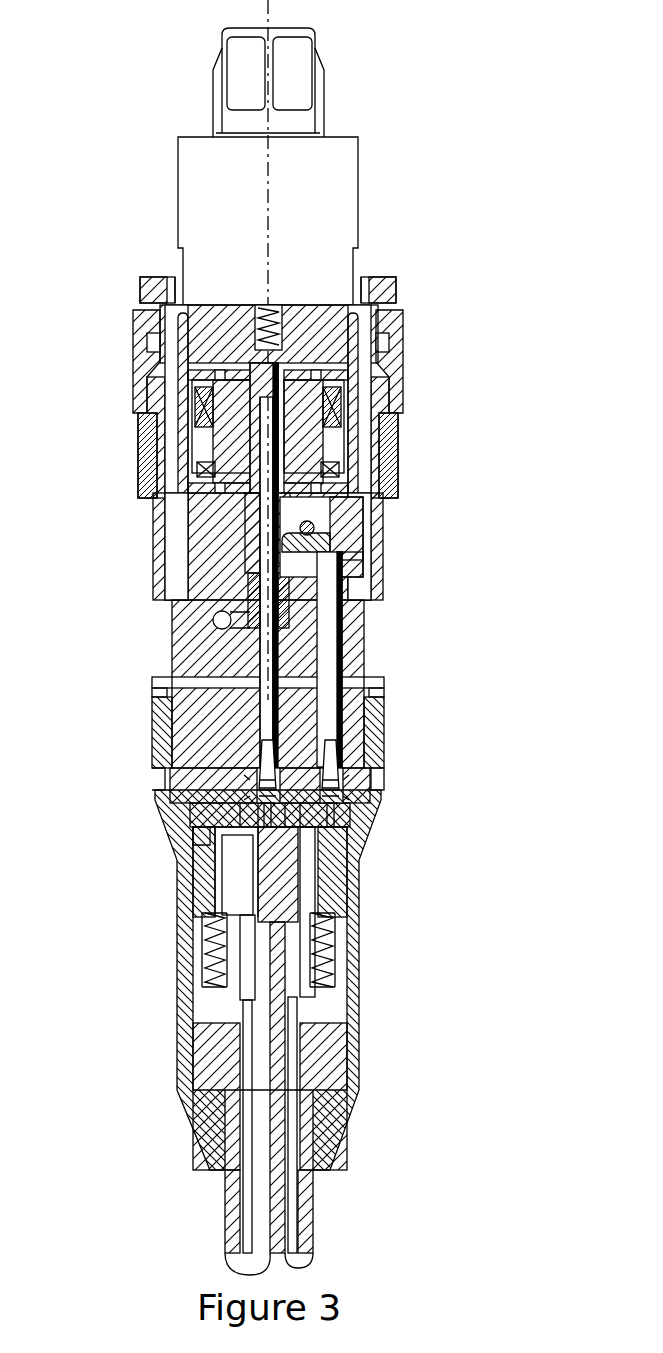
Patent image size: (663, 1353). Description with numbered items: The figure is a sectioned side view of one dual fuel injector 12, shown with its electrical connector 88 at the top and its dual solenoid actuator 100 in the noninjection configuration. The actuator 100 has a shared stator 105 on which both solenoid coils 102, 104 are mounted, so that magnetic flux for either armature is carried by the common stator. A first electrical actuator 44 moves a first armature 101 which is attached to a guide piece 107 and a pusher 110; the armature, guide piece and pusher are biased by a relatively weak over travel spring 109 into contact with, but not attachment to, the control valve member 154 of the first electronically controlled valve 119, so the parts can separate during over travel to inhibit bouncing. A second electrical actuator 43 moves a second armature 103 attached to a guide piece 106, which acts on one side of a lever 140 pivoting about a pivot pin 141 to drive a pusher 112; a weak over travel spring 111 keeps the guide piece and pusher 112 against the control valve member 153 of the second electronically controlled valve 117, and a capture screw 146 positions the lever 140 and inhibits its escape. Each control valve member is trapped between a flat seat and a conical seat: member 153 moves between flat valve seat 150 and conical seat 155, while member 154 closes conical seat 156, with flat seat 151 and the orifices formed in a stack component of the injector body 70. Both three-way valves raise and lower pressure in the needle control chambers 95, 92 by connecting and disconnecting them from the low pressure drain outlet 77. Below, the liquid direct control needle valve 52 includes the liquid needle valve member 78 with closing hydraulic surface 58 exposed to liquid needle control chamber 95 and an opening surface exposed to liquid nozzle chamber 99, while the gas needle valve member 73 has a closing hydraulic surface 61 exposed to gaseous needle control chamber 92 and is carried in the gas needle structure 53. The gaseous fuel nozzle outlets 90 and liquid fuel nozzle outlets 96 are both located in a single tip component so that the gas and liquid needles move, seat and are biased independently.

The electrical connector 88 is at (268, 3).
The fuel injector 12 is at (410, 383).
The guide piece 107 is at (330, 365).
The over travel spring 109 is at (268, 305).
The dual solenoid actuator 100 is at (157, 455).
The shared stator 105 is at (398, 440).
The electrical actuator 44 is at (178, 338).
The guide piece 106 is at (178, 565).
The first armature 101 is at (188, 376).
The solenoid coil 102 is at (195, 410).
The solenoid coil 104 is at (200, 468).
The second armature 103 is at (200, 490).
The electrical actuator 43 is at (370, 480).
The over travel spring 111 is at (290, 610).
The pusher 112 is at (292, 640).
The lever 140 is at (335, 545).
The pivot pin 141 is at (315, 528).
The capture screw 146 is at (345, 590).
The pusher 110 is at (215, 627).
The drain outlet 77 is at (165, 780).
The flat valve seat 150 is at (375, 790).
The flat seat 151 is at (275, 770).
The control valve member 153 is at (340, 770).
The conical seat 155 is at (350, 785).
The conical seat 156 is at (262, 775).
The electronically controlled valve 117 is at (378, 780).
The electronically controlled valve 119 is at (165, 770).
The control valve member 154 is at (195, 812).
The injector body 70 is at (362, 880).
The liquid needle control chamber 95 is at (358, 830).
The closing hydraulic surface 61 is at (190, 830).
The closing hydraulic surface 58 is at (255, 830).
The gaseous needle control chamber 92 is at (185, 840).
The needle valve member 53 is at (202, 960).
The liquid direct control needle valve 52 is at (335, 960).
The liquid nozzle chamber 99 is at (330, 940).
The gas needle valve member 73 is at (210, 1023).
The liquid needle valve member 78 is at (330, 1023).
The gaseous fuel nozzle outlets 90 is at (245, 1268).
The liquid fuel nozzle outlets 96 is at (298, 1268).